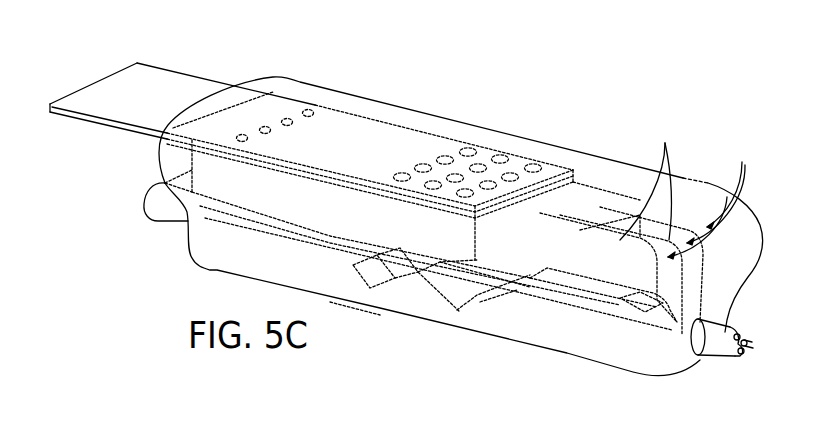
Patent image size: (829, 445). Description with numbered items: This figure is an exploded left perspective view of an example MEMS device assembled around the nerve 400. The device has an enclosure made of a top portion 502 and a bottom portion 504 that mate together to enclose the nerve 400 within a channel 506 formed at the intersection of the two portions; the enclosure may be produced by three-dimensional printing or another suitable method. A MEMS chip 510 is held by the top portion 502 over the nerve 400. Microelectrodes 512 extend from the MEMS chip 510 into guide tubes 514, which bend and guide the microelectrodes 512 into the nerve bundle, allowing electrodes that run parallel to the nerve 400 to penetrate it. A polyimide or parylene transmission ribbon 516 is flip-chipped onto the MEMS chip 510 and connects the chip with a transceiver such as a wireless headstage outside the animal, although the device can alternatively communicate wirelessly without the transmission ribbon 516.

The nerve 400 is at (163, 207).
The top portion 502 is at (610, 178).
The bottom portion 504 is at (653, 355).
The channel 506 is at (443, 285).
The MEMS chip 510 is at (445, 160).
The microelectrodes 512 is at (649, 174).
The guide tubes 514 is at (713, 193).
The transmission ribbon 516 is at (108, 98).